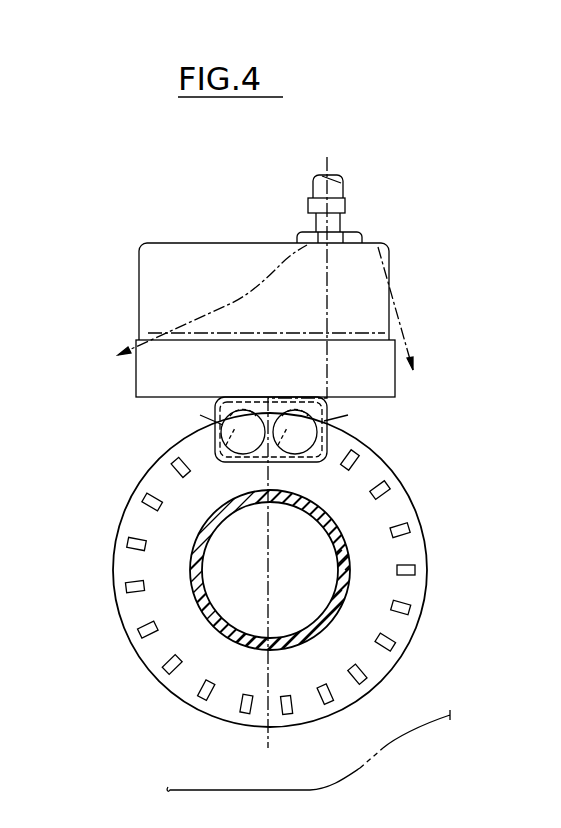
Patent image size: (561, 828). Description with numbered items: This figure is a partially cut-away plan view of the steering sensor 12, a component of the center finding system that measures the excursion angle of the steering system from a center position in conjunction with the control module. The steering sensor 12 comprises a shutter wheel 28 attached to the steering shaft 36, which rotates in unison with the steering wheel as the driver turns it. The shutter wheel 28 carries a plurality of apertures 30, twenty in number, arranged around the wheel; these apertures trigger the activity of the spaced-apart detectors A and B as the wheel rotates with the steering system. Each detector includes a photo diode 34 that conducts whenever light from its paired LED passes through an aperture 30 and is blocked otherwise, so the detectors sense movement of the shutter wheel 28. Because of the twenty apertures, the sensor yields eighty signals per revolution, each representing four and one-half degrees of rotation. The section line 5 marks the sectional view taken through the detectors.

The section line 5- 5 is at (329, 162).
The steering sensor 12 is at (430, 349).
The shutter wheel 28 is at (428, 588).
The apertures 30 is at (417, 566).
The photo diode 34 is at (238, 437).
The steering shaft 36 is at (322, 620).